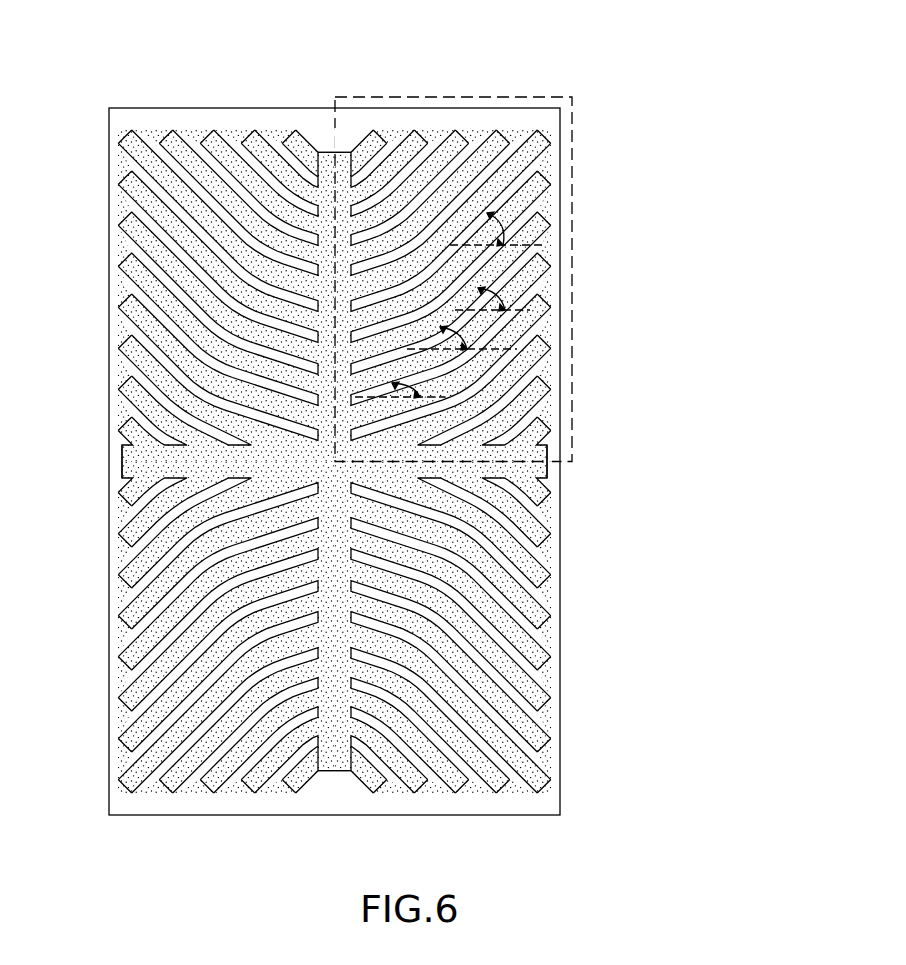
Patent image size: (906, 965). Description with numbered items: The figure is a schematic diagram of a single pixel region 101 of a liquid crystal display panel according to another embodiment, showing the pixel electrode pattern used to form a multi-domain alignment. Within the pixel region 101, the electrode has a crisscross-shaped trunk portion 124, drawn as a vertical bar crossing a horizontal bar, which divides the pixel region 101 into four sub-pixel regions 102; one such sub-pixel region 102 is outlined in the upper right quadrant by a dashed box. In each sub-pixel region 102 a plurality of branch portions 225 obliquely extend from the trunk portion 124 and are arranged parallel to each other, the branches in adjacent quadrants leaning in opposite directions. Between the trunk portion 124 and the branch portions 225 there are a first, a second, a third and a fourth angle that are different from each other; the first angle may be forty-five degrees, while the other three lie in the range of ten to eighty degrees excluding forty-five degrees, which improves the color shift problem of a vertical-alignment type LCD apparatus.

The pixel region 101 is at (562, 128).
The sub-pixel region 102 is at (488, 96).
The trunk portion 124 is at (547, 470).
The branch portions 225 is at (543, 582).